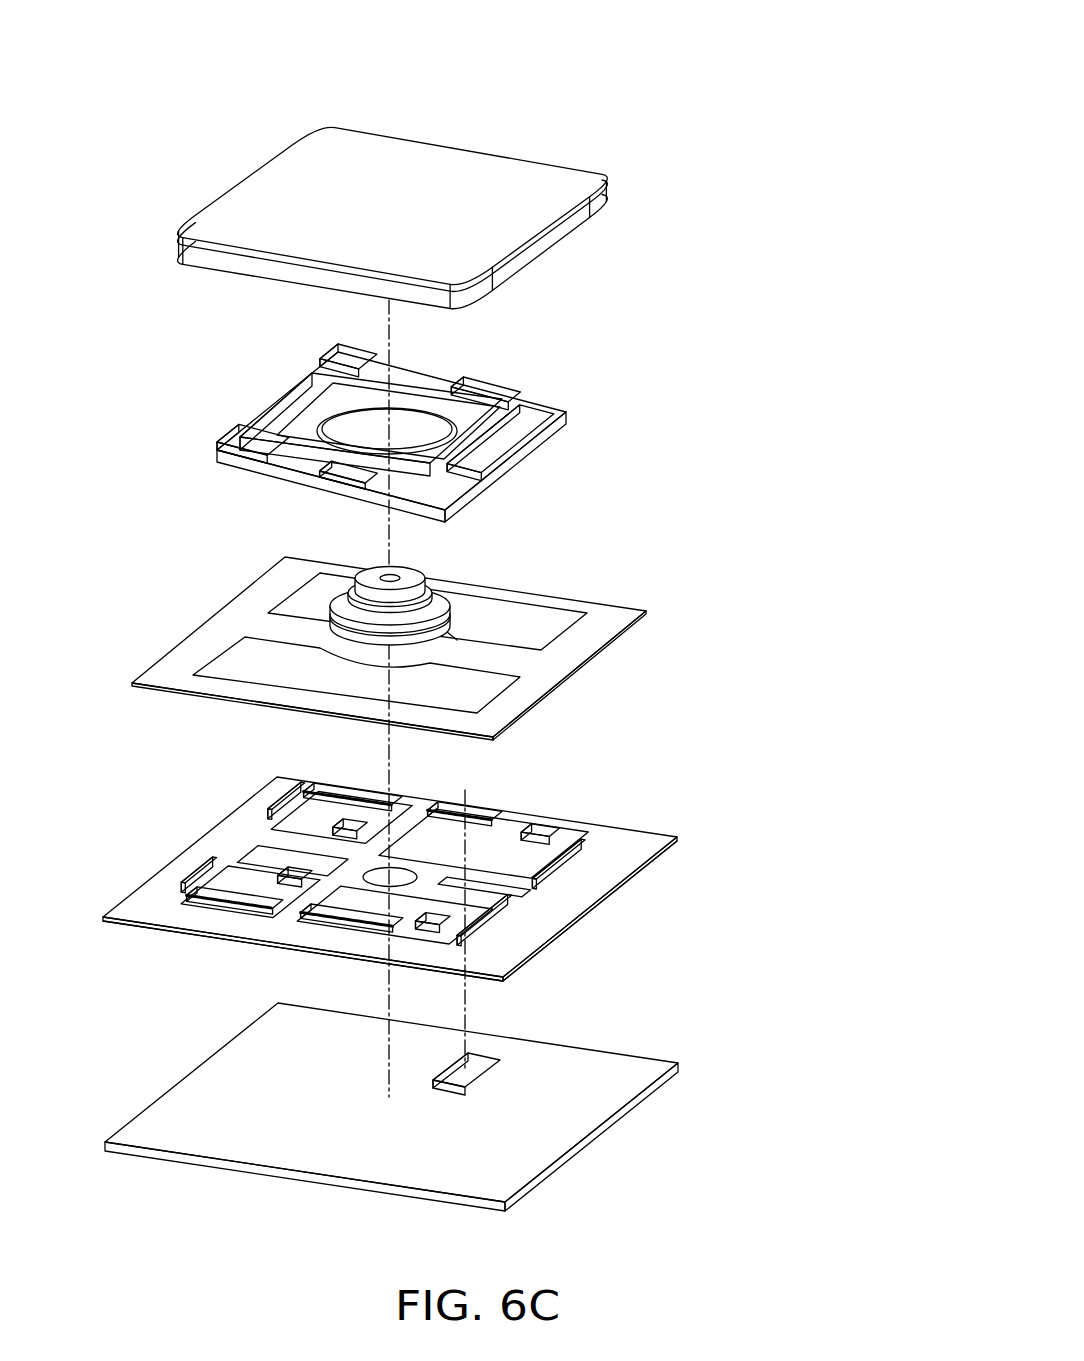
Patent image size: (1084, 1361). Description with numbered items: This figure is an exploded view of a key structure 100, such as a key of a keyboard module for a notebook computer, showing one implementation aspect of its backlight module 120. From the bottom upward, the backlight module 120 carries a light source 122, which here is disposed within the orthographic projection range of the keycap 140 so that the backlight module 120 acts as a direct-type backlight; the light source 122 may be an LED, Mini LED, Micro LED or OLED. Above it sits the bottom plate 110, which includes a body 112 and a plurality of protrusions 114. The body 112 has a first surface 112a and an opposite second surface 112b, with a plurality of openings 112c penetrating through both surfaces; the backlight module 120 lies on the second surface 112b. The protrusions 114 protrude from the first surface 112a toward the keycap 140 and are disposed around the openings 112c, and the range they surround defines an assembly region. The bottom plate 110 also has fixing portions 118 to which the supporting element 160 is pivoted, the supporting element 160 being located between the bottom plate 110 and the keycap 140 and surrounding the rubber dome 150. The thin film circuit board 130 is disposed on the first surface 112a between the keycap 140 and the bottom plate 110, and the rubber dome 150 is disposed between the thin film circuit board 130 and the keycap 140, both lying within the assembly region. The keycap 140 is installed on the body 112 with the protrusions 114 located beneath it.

The key structure 100 is at (655, 118).
The bottom plate 110 is at (499, 871).
The body 112 is at (473, 879).
The first surface 112a is at (634, 837).
The second surface 112b is at (646, 868).
The openings 112c is at (548, 935).
The protrusions 114 is at (360, 800).
The fixing portions 118 is at (348, 830).
The backlight module 120 is at (620, 1115).
The light source 122 is at (500, 1068).
The thin film circuit board 130 is at (612, 617).
The keycap 140 is at (540, 185).
The rubber dome 150 is at (432, 574).
The supporting element 160 is at (555, 420).